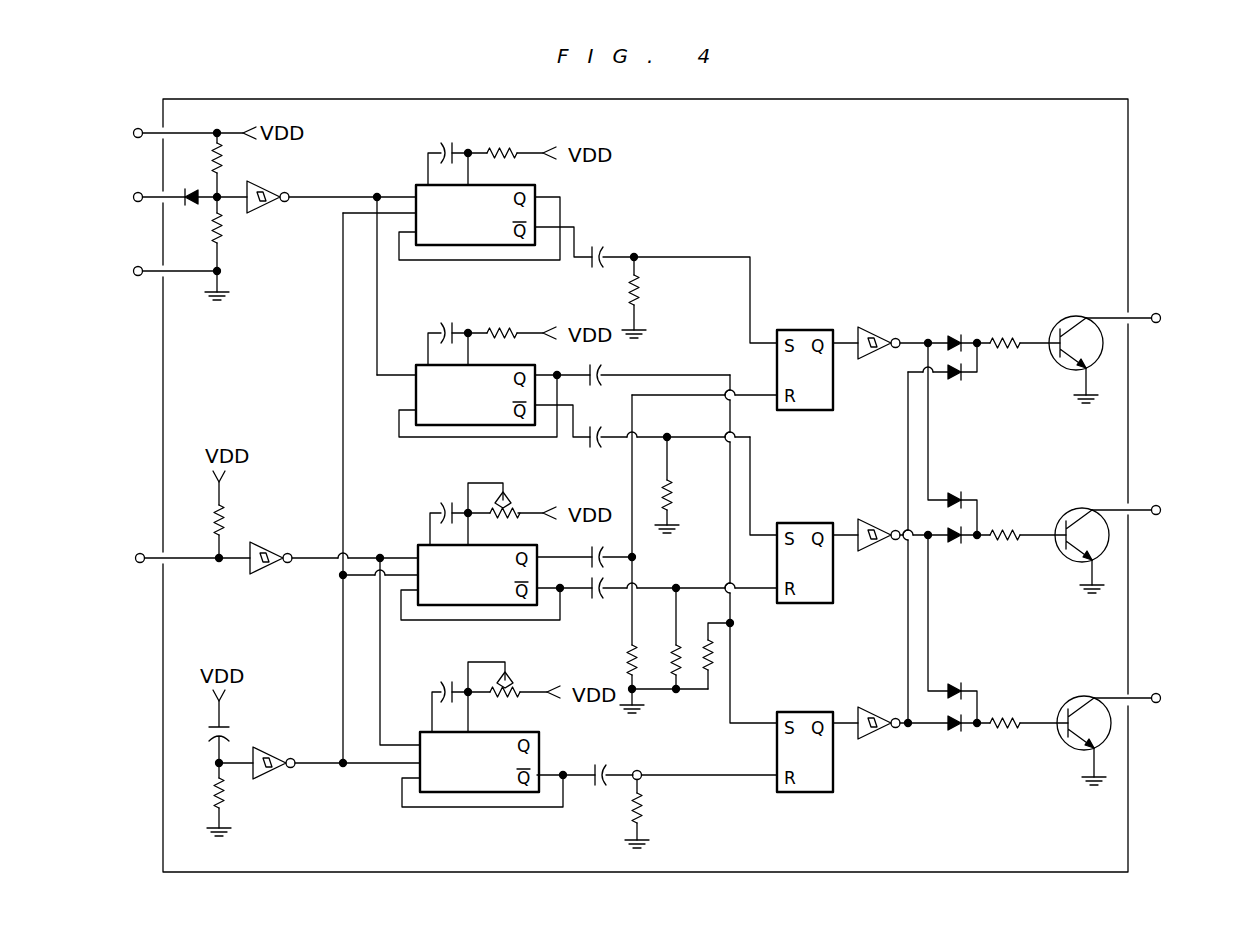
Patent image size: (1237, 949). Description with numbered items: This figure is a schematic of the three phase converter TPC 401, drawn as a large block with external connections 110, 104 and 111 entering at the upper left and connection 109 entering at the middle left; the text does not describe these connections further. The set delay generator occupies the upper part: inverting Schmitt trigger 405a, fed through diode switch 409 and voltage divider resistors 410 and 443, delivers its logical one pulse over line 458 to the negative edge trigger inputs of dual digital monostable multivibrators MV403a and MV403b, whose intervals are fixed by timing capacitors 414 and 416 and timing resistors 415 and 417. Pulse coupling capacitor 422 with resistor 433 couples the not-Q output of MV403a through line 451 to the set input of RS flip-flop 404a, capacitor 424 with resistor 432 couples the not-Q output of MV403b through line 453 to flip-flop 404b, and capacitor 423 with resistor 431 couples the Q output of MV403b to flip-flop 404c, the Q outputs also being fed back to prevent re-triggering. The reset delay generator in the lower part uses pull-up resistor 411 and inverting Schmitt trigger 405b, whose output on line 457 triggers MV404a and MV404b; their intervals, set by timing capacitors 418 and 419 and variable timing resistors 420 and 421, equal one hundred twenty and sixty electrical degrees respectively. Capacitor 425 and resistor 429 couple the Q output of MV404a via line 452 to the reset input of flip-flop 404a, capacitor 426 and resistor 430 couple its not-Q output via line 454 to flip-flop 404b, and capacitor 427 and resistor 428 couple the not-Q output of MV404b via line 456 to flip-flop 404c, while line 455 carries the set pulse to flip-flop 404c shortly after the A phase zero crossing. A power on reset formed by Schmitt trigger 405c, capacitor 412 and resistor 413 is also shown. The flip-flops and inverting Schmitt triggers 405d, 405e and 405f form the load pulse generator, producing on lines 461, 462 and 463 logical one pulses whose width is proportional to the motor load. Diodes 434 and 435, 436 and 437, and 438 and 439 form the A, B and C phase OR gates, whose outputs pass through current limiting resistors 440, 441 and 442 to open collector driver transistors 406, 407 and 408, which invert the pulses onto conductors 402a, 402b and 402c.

The input terminal 110 is at (134, 131).
The input terminal 104 is at (134, 195).
The ground terminal 111 is at (134, 269).
The input terminal 109 is at (136, 556).
The three phase converter 401 is at (1130, 212).
The conductor 402a is at (1160, 314).
The conductor 402b is at (1160, 506).
The conductor 402c is at (1160, 694).
The monostable multivibrator MV403a is at (412, 183).
The monostable multivibrator MV403b is at (427, 438).
The monostable multivibrator MV404a is at (417, 542).
The monostable multivibrator MV404b is at (541, 759).
The RS flip-flop 404a is at (822, 412).
The RS flip-flop 404b is at (836, 598).
The RS flip-flop 404c is at (838, 792).
The inverting Schmitt trigger 405a is at (287, 195).
The inverting Schmitt trigger 405b is at (267, 546).
The Schmitt trigger 405c is at (279, 770).
The inverting Schmitt trigger 405d is at (863, 327).
The inverting Schmitt trigger 405e is at (871, 518).
The inverting Schmitt trigger 405f is at (872, 707).
The phase A driver transistor 406 is at (1080, 316).
The phase B driver transistor 407 is at (1077, 510).
The phase C driver transistor 408 is at (1080, 698).
The diode switch 409 is at (193, 188).
The voltage divider resistor 410 is at (222, 170).
The pull-up resistor 411 is at (226, 515).
The capacitor 412 is at (229, 732).
The resistor 413 is at (226, 796).
The timing capacitor 414 is at (441, 146).
The timing resistor 415 is at (506, 149).
The timing capacitor 416 is at (444, 326).
The timing resistor 417 is at (500, 328).
The timing capacitor 418 is at (442, 508).
The timing capacitor 419 is at (442, 688).
The variable timing resistor 420 is at (516, 509).
The variable timing resistor 421 is at (515, 688).
The pulse coupling capacitor 422 is at (602, 248).
The pulse coupling capacitor 423 is at (604, 372).
The pulse coupling capacitor 424 is at (597, 450).
The pulse coupling capacitor 425 is at (589, 550).
The pulse coupling capacitor 426 is at (598, 602).
The pulse coupling capacitor 427 is at (600, 802).
The pulse coupling resistor 428 is at (651, 818).
The pulse coupling resistor 429 is at (630, 658).
The pulse coupling resistor 430 is at (667, 638).
The pulse coupling resistor 431 is at (705, 636).
The pulse coupling resistor 432 is at (673, 492).
The pulse coupling resistor 433 is at (640, 292).
The diode 434 is at (953, 330).
The diode 435 is at (960, 380).
The diode 436 is at (962, 493).
The diode 437 is at (960, 549).
The diode 438 is at (961, 686).
The diode 439 is at (960, 738).
The resistor 440 is at (1001, 336).
The resistor 441 is at (1001, 528).
The resistor 442 is at (1001, 718).
The voltage divider resistor 443 is at (224, 237).
The line 451 is at (756, 270).
The line 452 is at (746, 392).
The line 453 is at (754, 482).
The line 454 is at (757, 592).
The line 455 is at (748, 720).
The line 456 is at (736, 780).
The line 457 is at (318, 565).
The line 458 is at (292, 202).
The line 461 is at (906, 362).
The line 462 is at (931, 638).
The line 463 is at (905, 738).